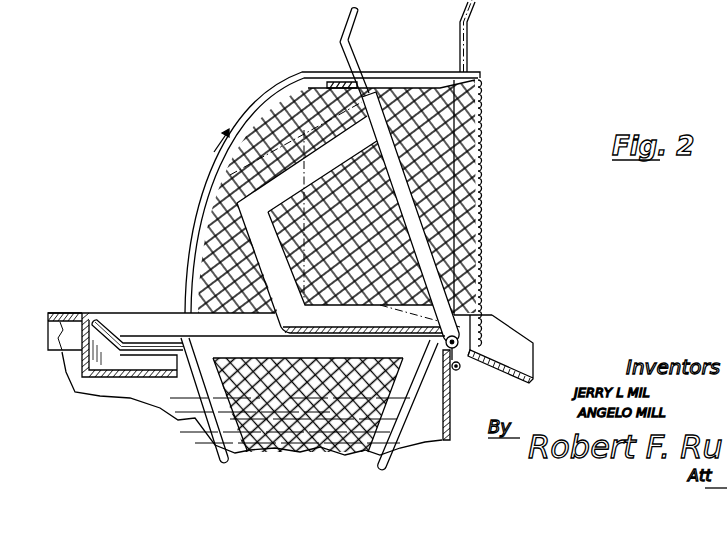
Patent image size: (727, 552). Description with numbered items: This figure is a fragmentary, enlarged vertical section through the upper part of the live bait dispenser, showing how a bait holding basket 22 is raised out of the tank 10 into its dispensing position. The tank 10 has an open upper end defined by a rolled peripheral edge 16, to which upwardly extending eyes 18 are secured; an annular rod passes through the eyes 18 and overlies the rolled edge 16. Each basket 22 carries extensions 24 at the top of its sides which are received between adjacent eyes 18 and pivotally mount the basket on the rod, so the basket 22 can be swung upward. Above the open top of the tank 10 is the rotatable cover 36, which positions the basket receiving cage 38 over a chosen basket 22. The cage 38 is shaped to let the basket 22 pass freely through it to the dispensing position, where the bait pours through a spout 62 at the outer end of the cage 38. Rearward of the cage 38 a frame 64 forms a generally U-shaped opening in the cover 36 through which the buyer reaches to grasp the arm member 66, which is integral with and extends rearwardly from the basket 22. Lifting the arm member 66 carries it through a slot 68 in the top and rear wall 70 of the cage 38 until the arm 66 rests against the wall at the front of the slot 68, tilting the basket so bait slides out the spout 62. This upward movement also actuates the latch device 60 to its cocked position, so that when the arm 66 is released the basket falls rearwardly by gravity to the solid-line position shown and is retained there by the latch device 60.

The tank 10 is at (51, 318).
The rolled peripheral edge 16 is at (462, 369).
The eyes 18 is at (471, 348).
The bait holding basket 22 is at (236, 206).
The extension 24 is at (490, 314).
The cover 36 is at (48, 327).
The basket receiving cage 38 is at (476, 63).
The latch device 60 is at (350, 82).
The spout 62 is at (535, 347).
The frame 64 is at (101, 370).
The arm member 66 is at (110, 332).
The slot 68 is at (262, 110).
The top and rear wall 70 is at (293, 80).